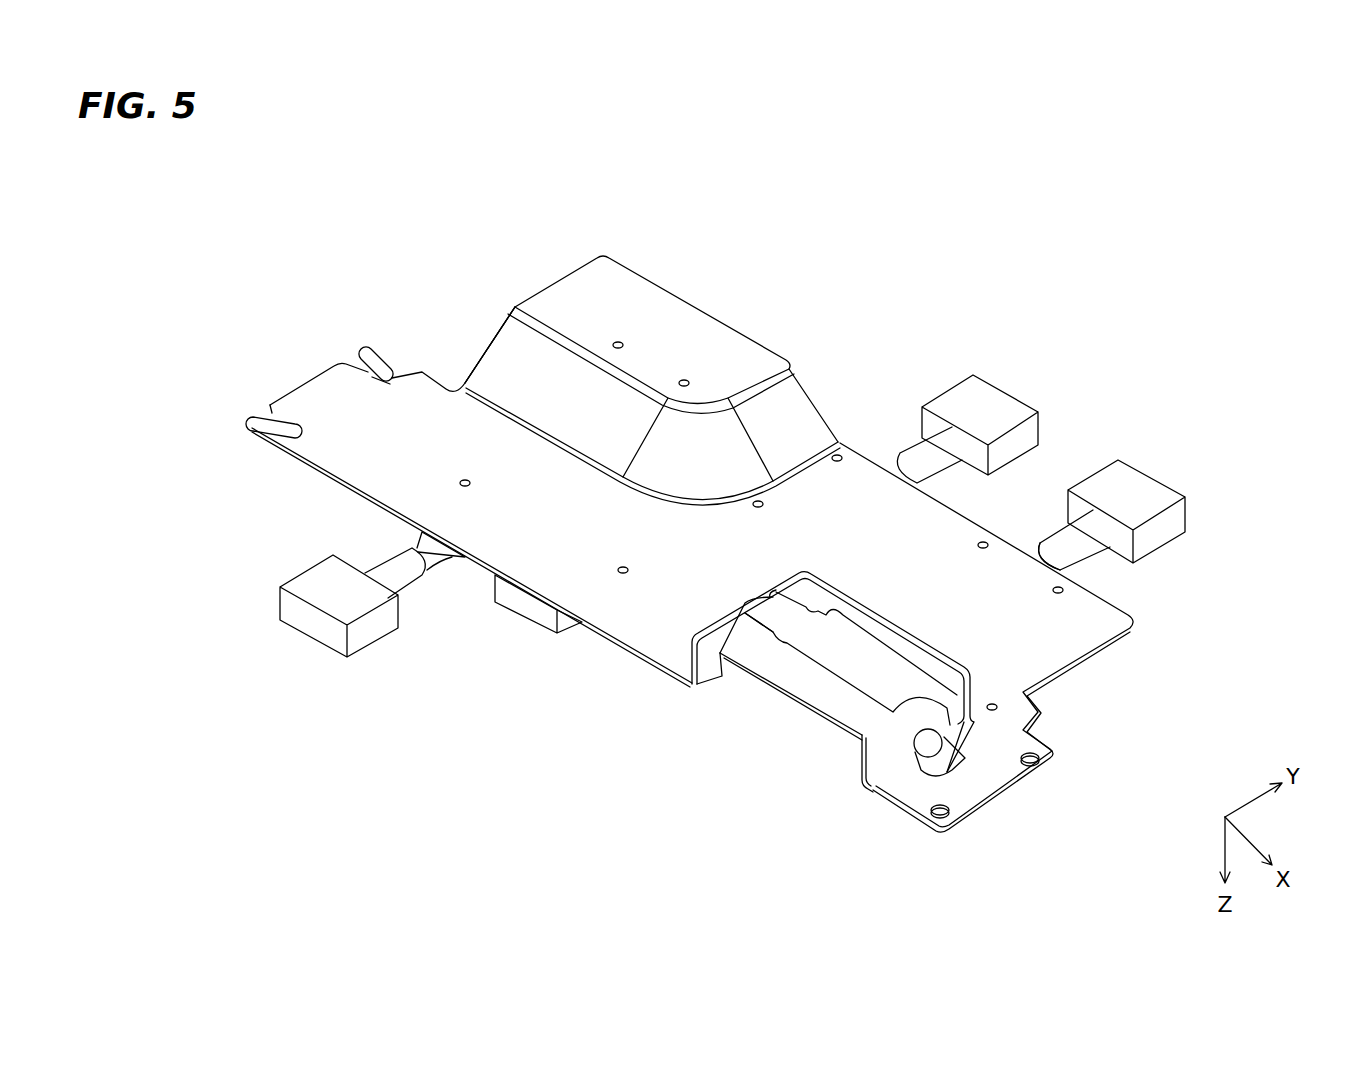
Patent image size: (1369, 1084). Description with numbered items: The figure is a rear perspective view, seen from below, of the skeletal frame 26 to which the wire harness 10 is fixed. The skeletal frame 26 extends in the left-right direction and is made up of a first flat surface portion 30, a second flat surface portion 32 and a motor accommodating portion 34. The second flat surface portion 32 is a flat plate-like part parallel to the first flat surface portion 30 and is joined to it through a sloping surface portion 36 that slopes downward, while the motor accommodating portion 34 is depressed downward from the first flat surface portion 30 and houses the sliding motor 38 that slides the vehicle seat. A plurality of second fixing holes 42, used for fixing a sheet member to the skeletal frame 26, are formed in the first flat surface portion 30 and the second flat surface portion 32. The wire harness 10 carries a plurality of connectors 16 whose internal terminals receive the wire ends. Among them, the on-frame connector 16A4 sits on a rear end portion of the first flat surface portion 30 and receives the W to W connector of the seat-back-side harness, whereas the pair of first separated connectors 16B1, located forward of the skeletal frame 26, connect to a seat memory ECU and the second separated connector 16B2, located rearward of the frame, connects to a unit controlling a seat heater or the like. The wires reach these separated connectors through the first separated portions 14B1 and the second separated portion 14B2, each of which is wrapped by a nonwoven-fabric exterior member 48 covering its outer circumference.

The wire harness 10 is at (254, 584).
The skeletal frame 26 is at (283, 365).
The first flat surface portion 30 is at (422, 398).
The second flat surface portion 32 is at (648, 303).
The motor accommodating portion 34 is at (900, 650).
The sloping surface portion 36 is at (510, 358).
The sliding motor 38 is at (750, 678).
The second fixing holes 42 is at (623, 574).
The exterior members 48 is at (923, 455).
The first separated portions 14B1 is at (968, 490).
The second separated portion 14B2 is at (374, 530).
The connectors 16 is at (972, 350).
The on-frame connector 16A4 is at (532, 605).
The first separated connectors 16B1 is at (1007, 417).
The second separated connector 16B2 is at (305, 615).